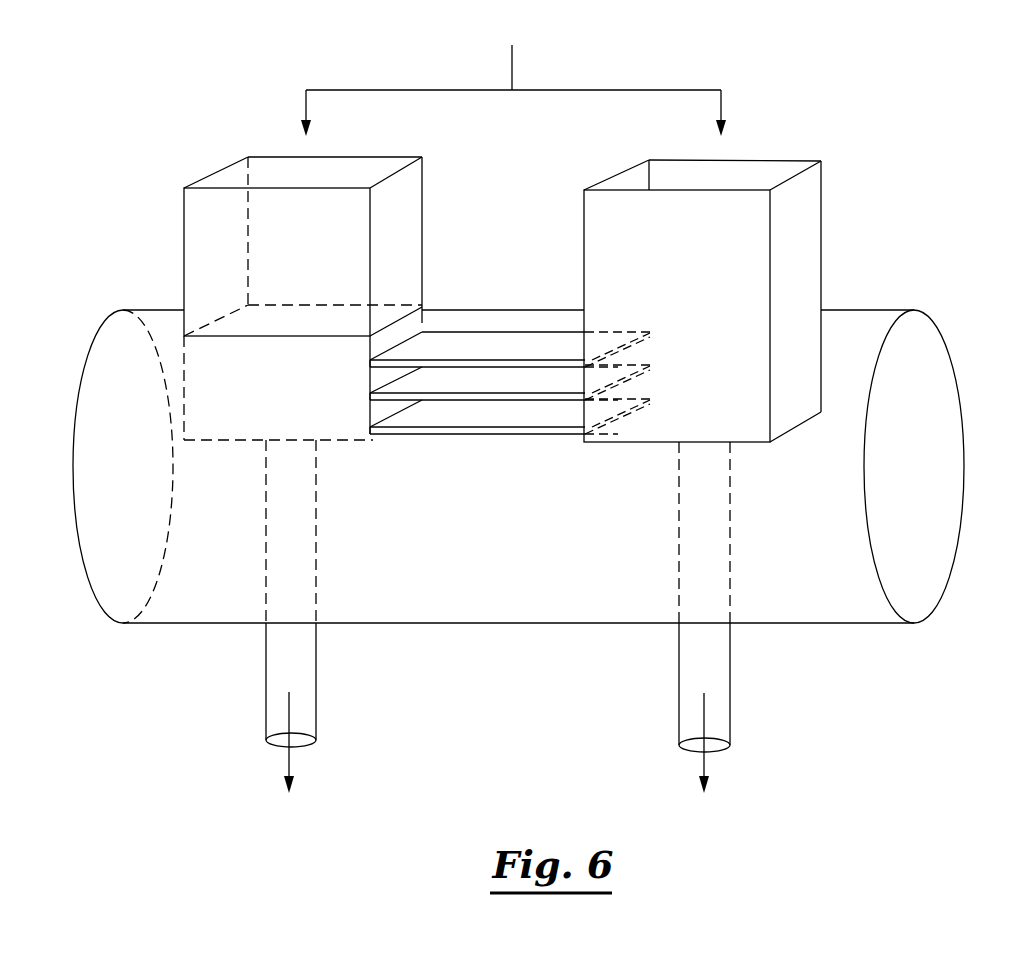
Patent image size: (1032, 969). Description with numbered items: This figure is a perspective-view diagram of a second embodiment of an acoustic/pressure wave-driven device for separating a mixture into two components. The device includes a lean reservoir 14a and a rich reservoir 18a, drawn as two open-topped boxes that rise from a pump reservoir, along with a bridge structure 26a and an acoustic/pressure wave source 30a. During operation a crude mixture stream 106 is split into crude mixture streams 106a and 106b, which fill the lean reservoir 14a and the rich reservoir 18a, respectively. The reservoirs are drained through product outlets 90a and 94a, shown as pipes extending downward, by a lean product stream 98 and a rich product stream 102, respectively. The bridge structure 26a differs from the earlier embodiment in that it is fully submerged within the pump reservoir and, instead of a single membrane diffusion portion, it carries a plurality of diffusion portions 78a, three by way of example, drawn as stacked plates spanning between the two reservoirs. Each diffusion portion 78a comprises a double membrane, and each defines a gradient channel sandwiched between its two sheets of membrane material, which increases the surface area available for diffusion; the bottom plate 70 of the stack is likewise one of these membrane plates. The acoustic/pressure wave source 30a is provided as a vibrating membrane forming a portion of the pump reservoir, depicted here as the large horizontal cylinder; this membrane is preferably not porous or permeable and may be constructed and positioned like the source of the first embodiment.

The crude mixture stream 106 is at (510, 67).
The crude mixture stream 106a is at (722, 108).
The crude mixture stream 106b is at (305, 105).
The lean reservoir 14a is at (823, 249).
The rich reservoir 18a is at (184, 223).
The bridge structure 26a is at (404, 447).
The acoustic/pressure wave source 30a is at (939, 401).
The plate stack 70 is at (473, 432).
The diffusion portion 78a is at (480, 383).
The product outlet 90a is at (730, 667).
The product outlet 94a is at (266, 672).
The lean product stream 98 is at (705, 767).
The rich product stream 102 is at (288, 760).